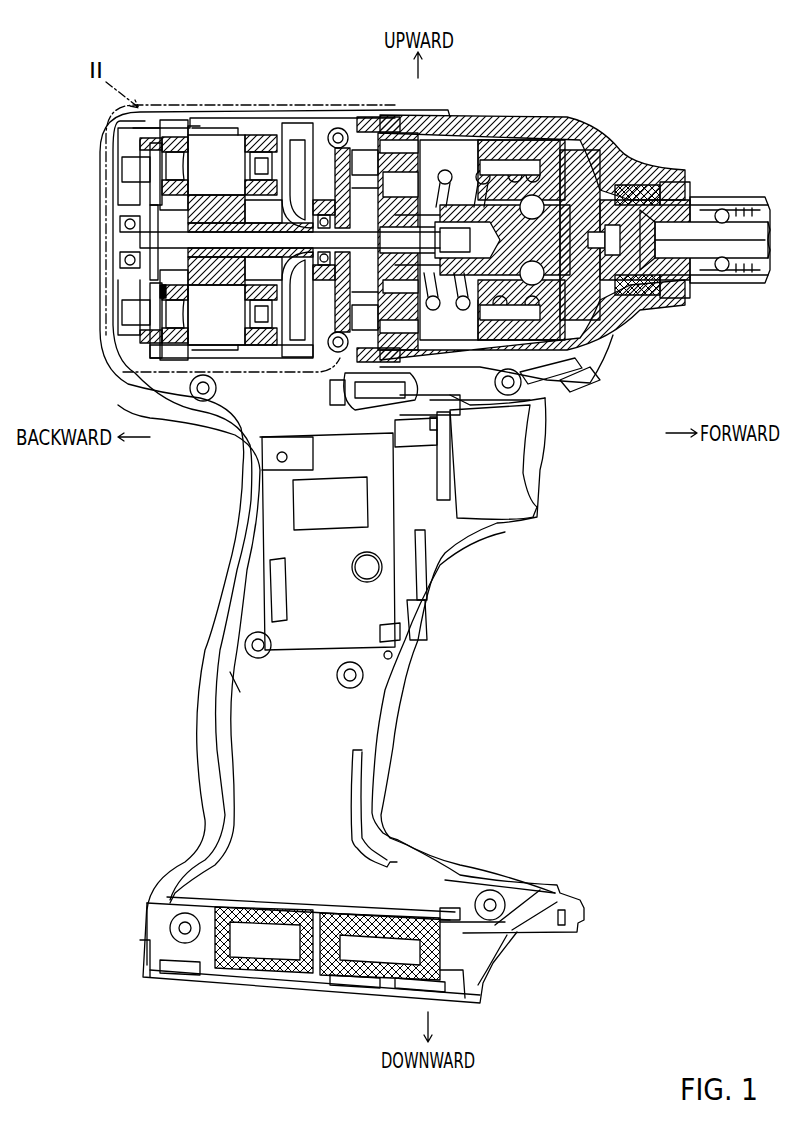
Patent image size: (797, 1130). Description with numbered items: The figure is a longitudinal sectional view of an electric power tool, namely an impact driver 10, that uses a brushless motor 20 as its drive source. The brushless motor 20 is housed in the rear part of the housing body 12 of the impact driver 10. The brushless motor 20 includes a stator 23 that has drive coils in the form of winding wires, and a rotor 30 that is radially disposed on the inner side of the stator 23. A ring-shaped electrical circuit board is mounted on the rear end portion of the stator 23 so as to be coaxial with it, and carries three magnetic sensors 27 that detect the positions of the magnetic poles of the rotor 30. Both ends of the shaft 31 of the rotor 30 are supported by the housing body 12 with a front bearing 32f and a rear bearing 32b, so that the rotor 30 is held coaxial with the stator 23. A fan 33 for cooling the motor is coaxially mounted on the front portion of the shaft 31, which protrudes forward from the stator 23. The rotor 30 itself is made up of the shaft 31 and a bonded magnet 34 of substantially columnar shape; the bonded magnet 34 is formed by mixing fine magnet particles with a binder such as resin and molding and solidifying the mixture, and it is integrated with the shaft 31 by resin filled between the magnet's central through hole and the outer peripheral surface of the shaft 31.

The impact driver 10 is at (490, 96).
The housing body 12 is at (326, 98).
The brushless motor 20 is at (234, 116).
The stator 23 is at (209, 144).
The magnetic sensors 27 is at (150, 205).
The rotor 30 is at (174, 284).
The shaft 31 is at (143, 242).
The bearing 32b is at (118, 263).
The bearing 32f is at (333, 126).
The fan 33 is at (298, 150).
The bonded magnet 34 is at (182, 280).